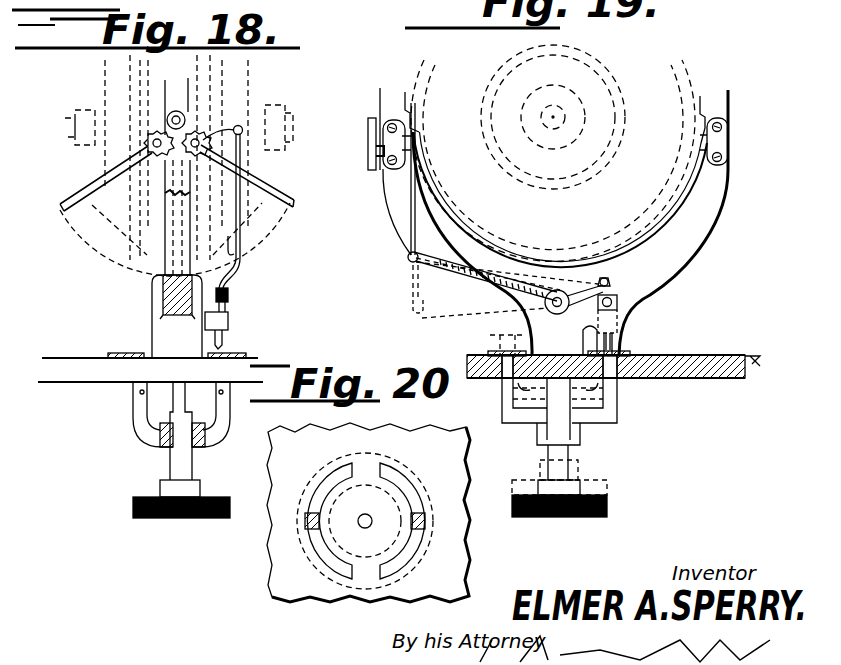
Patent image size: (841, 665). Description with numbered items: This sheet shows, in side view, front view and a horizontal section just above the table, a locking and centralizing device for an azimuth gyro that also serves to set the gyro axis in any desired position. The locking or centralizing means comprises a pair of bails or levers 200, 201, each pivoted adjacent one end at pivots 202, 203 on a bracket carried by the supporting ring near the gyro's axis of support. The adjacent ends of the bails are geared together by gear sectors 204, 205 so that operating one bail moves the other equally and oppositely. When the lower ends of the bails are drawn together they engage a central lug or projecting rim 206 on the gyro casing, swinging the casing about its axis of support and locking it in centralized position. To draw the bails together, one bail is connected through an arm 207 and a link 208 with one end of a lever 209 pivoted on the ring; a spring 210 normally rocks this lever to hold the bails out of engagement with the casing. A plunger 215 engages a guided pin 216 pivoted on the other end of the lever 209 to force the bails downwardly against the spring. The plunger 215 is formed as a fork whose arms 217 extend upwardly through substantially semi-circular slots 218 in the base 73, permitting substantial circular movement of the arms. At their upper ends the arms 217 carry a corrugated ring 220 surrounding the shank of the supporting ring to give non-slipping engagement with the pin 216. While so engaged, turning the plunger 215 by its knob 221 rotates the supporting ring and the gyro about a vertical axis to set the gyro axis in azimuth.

In FIG. 18, the base 73 is at (80, 384).
In FIG. 19, the base 73 is at (728, 374).
In FIG. 20, the base 73 is at (333, 620).
In FIG. 18, the bail 200 is at (86, 178).
In FIG. 18, the bail 201 is at (276, 176).
In FIG. 19, the bail 201 is at (670, 200).
In FIG. 18, the pivot 202 is at (150, 144).
In FIG. 18, the pivot 203 is at (198, 142).
In FIG. 18, the gear sector 204 is at (168, 130).
In FIG. 18, the gear sector 205 is at (190, 115).
In FIG. 19, the gear sector 205 is at (380, 92).
In FIG. 18, the central lug or projecting rim 206 is at (158, 258).
In FIG. 18, the arm 207 is at (241, 126).
In FIG. 19, the arm 207 is at (404, 130).
In FIG. 18, the link 208 is at (243, 160).
In FIG. 19, the link 208 is at (412, 214).
In FIG. 18, the lever 209 is at (224, 252).
In FIG. 19, the lever 209 is at (412, 262).
In FIG. 18, the spring 210 is at (230, 292).
In FIG. 19, the spring 210 is at (556, 290).
In FIG. 18, the plunger 215 is at (172, 466).
In FIG. 19, the plunger 215 is at (572, 450).
In FIG. 20, the plunger 215 is at (366, 528).
In FIG. 18, the guided pin 216 is at (224, 338).
In FIG. 19, the guided pin 216 is at (620, 333).
In FIG. 19, the arms 217 is at (505, 392).
In FIG. 20, the arms 217 is at (316, 532).
In FIG. 20, the semi-circular slots 218 is at (325, 486).
In FIG. 18, the corrugated ring 220 is at (112, 354).
In FIG. 19, the corrugated ring 220 is at (618, 355).
In FIG. 18, the knob 221 is at (136, 522).
In FIG. 19, the knob 221 is at (576, 516).